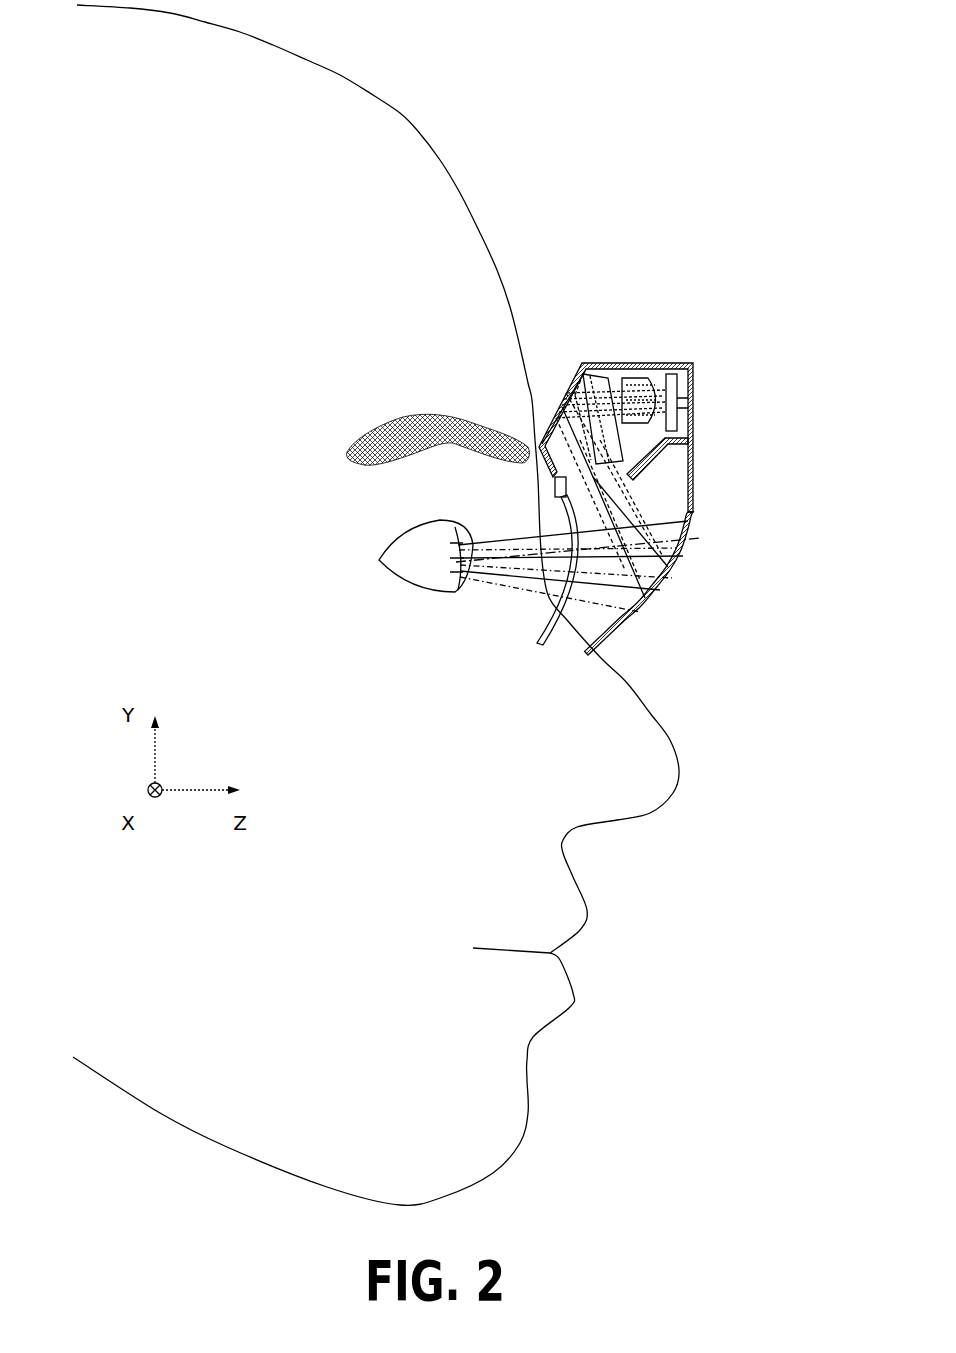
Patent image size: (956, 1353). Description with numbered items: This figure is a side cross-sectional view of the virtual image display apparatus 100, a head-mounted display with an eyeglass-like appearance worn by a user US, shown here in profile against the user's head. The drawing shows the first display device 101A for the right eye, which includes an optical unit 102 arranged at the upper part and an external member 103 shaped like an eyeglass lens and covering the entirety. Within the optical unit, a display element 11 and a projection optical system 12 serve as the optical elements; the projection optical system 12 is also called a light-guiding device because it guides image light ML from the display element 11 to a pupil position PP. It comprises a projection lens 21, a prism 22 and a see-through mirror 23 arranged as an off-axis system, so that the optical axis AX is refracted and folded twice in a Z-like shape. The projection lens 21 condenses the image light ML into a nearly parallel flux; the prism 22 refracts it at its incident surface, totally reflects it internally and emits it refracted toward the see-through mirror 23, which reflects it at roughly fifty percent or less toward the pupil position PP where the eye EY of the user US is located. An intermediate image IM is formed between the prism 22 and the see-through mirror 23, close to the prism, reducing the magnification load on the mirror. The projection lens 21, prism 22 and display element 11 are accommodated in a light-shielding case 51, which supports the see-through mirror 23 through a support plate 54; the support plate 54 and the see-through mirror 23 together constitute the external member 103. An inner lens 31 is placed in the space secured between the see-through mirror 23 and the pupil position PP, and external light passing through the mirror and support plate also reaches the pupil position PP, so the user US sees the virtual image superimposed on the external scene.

The user US is at (415, 127).
The virtual image display apparatus 100 is at (624, 475).
The first display device 101A is at (624, 497).
The optical unit 102 is at (621, 435).
The display element 11 is at (677, 373).
The projection optical system 12 is at (536, 394).
The projection lens 21 is at (641, 366).
The prism 22 is at (588, 368).
The case 51 is at (692, 405).
The support plate 54 is at (698, 445).
The image light ML is at (693, 482).
The optical axis AX is at (697, 518).
The intermediate image IM is at (556, 501).
The external member 103 is at (690, 583).
The see-through mirror 23 is at (652, 595).
The inner lens 31 is at (535, 652).
The eye EY is at (412, 575).
The pupil position PP is at (446, 587).